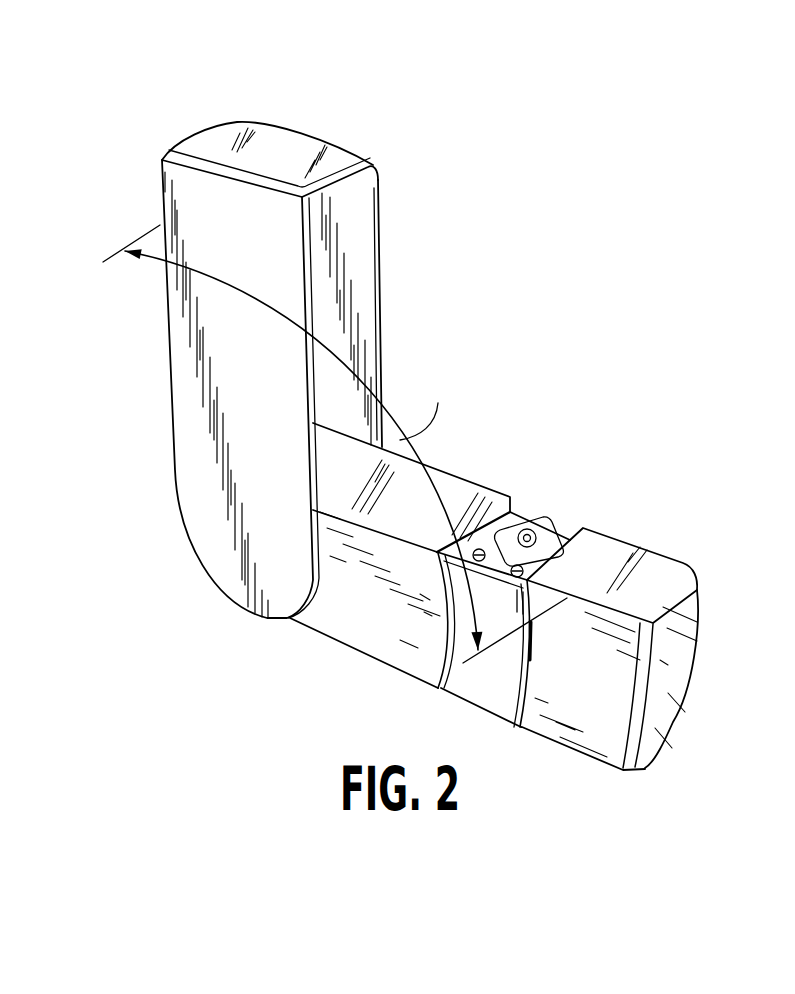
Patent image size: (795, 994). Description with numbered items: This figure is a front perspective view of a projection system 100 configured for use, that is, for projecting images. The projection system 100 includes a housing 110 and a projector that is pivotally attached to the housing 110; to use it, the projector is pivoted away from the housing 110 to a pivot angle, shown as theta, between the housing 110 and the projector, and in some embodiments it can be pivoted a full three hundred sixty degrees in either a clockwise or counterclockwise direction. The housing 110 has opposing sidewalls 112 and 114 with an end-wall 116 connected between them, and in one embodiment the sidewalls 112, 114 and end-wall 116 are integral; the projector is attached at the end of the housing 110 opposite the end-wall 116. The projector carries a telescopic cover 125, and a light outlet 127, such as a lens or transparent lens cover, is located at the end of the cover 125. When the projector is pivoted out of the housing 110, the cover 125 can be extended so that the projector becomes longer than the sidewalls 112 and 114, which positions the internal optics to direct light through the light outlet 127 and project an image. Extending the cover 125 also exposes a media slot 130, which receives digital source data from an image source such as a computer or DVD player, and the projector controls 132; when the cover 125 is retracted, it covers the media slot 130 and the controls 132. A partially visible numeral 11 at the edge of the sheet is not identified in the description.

The projection system 100 is at (570, 168).
The housing 110 is at (393, 184).
The sidewall 112 is at (170, 366).
The sidewall 114 is at (381, 299).
The end-wall 116 is at (338, 153).
The telescopic cover 125 is at (615, 551).
The light outlet 127 is at (693, 637).
The media slot 130 is at (528, 536).
The projector controls 132 is at (480, 552).
The reference (truncated) 11 is at (784, 246).